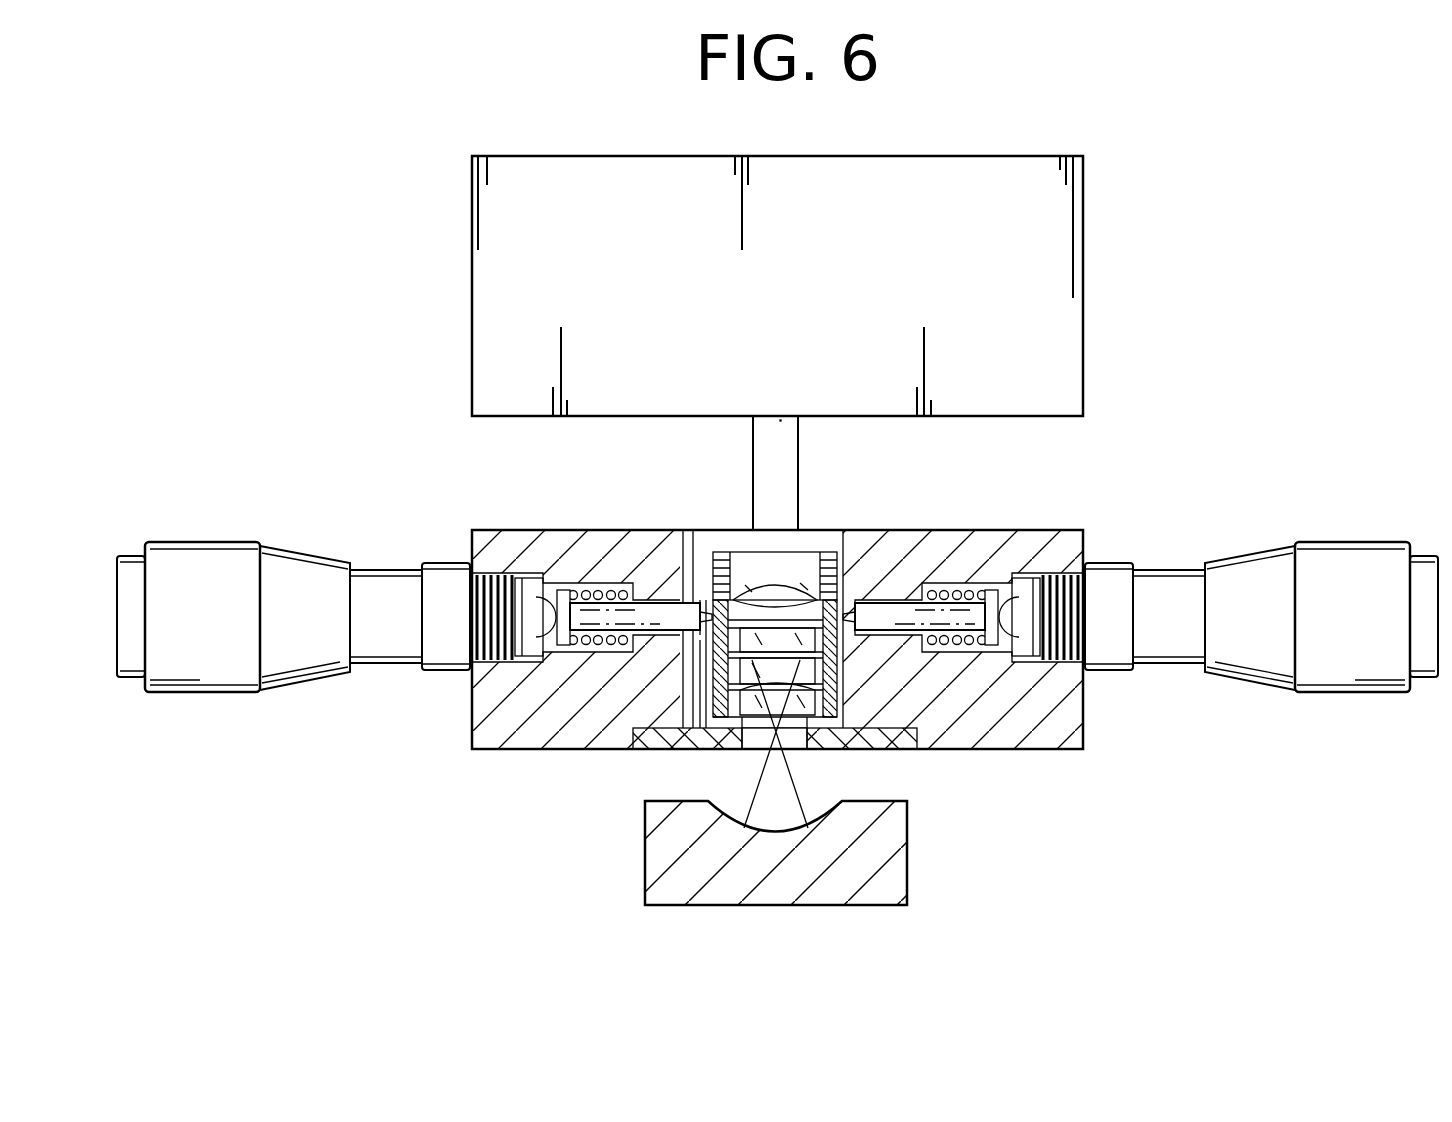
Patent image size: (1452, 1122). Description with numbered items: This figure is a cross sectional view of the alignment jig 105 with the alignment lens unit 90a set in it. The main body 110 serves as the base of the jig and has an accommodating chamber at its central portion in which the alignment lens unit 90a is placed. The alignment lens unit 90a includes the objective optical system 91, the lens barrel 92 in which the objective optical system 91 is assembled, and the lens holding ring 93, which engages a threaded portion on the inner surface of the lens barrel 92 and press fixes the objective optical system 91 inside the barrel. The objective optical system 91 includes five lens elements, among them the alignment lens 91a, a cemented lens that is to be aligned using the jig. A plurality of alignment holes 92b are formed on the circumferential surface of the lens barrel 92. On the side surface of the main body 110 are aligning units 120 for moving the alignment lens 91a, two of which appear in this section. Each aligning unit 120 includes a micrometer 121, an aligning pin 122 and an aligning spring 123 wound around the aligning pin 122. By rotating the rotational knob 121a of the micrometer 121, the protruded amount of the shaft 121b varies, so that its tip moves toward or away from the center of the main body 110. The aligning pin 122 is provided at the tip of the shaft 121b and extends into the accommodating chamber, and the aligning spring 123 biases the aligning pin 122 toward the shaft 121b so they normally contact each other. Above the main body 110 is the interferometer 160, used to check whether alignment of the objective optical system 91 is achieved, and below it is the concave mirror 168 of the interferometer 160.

The alignment jig 105 is at (352, 266).
The interferometer 160 is at (1037, 265).
The main body 110 is at (530, 730).
The aligning unit 120 is at (222, 700).
The micrometer 121 is at (315, 558).
The rotational knob 121a is at (200, 548).
The shaft 121b is at (523, 665).
The aligning pin 122 is at (530, 580).
The aligning spring 123 is at (600, 584).
The lens holding ring 93 is at (735, 560).
The objective optical system 91 is at (857, 577).
The alignment lens 91a is at (848, 585).
The lens barrel 92 is at (722, 740).
The alignment hole 92b is at (705, 630).
The alignment lens unit 90a is at (722, 688).
The concave mirror 168 is at (652, 862).